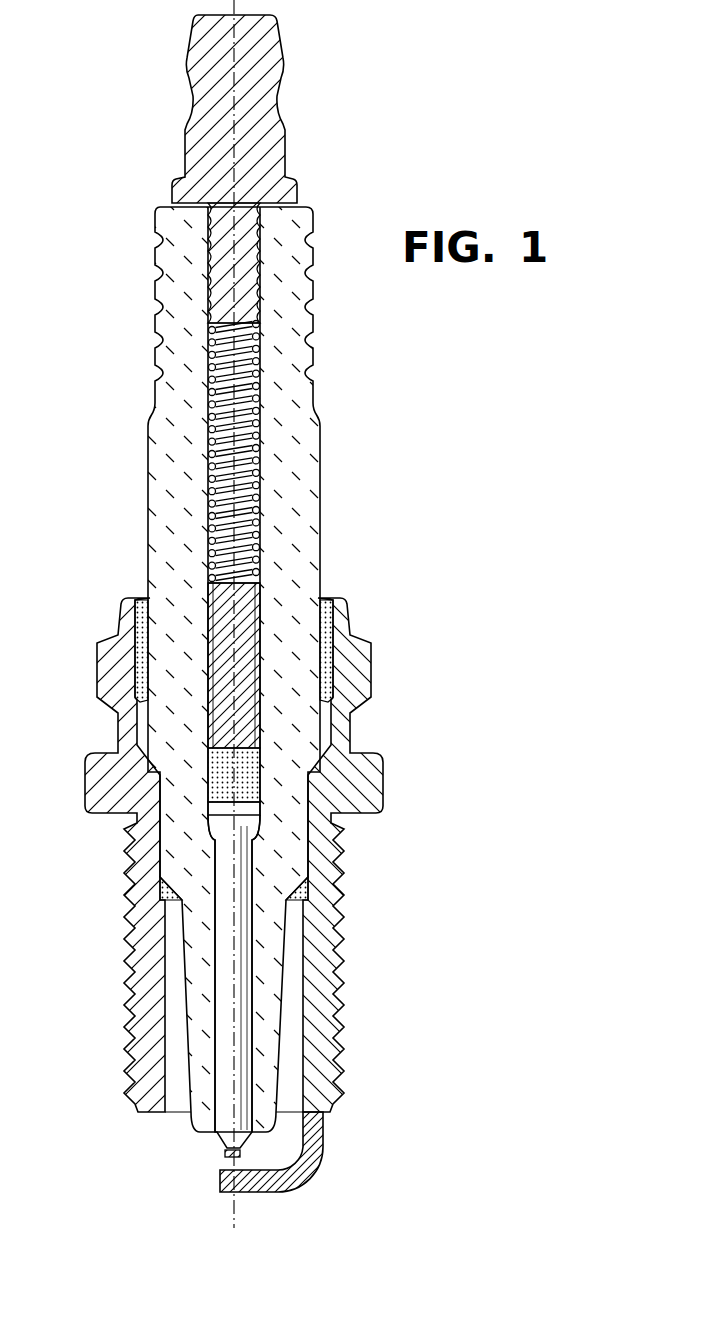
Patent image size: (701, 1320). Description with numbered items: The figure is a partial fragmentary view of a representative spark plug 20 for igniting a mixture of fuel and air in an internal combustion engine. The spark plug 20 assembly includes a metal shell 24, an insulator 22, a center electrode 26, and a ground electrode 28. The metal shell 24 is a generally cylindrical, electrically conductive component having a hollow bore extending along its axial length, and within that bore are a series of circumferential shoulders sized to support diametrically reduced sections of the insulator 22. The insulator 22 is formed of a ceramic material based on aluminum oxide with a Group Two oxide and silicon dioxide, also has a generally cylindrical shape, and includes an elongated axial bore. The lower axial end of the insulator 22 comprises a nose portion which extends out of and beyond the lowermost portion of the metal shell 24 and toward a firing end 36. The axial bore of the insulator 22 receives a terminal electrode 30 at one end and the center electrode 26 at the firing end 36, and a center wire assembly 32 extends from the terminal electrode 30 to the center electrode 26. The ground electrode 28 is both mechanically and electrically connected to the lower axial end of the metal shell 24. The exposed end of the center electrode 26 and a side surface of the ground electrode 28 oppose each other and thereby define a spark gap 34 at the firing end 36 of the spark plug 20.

The spark plug 20 is at (86, 157).
The insulator 22 is at (148, 468).
The metal shell 24 is at (384, 782).
The center electrode 26 is at (267, 1122).
The ground electrode 28 is at (300, 1183).
The terminal electrode 30 is at (270, 68).
The center wire assembly 32 is at (262, 597).
The spark gap 34 is at (220, 1165).
The firing end 36 is at (233, 1244).